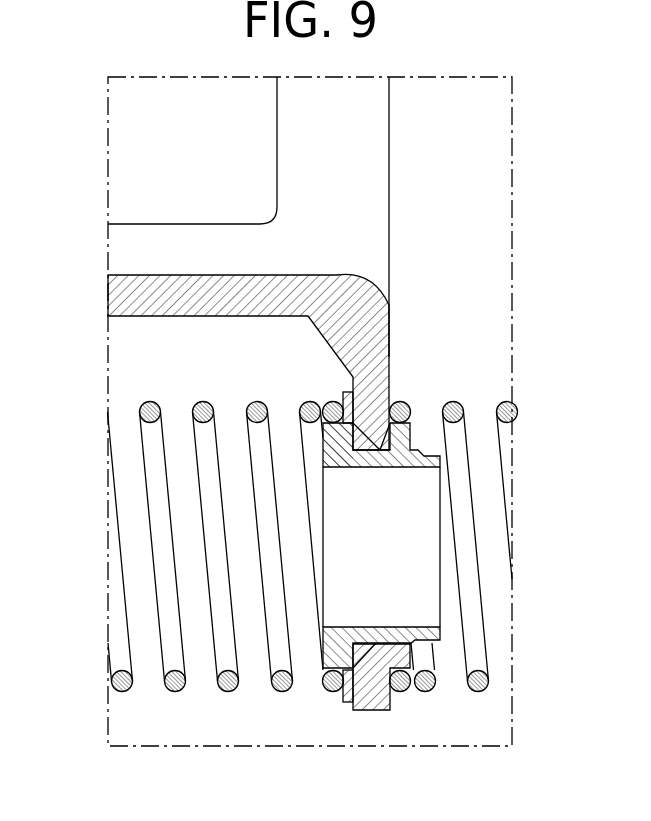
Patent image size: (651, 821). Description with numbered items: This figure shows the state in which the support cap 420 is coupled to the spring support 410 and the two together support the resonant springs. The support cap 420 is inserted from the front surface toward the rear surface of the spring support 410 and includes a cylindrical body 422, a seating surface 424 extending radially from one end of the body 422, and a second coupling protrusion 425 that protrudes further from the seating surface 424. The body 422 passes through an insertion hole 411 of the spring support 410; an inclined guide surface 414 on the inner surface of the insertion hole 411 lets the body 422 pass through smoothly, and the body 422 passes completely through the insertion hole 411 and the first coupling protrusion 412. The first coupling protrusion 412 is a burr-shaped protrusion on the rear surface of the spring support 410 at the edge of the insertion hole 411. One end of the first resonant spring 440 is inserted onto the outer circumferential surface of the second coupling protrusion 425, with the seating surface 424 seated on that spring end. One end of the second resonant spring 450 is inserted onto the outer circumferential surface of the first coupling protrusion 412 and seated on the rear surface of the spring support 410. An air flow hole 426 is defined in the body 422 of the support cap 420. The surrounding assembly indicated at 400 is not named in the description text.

The valve body 400 is at (112, 297).
The seating surface 424 is at (345, 392).
The insertion hole 411 is at (410, 413).
The first coupling protrusion 412 is at (375, 439).
The second coupling protrusion 425 is at (333, 443).
The air flow hole 426 is at (418, 535).
The body 422 is at (405, 632).
The spring support 410 is at (374, 705).
The inclined guide surface 414 is at (365, 698).
The support cap 420 is at (452, 646).
The first resonant spring 440 is at (228, 694).
The second resonant spring 450 is at (476, 694).